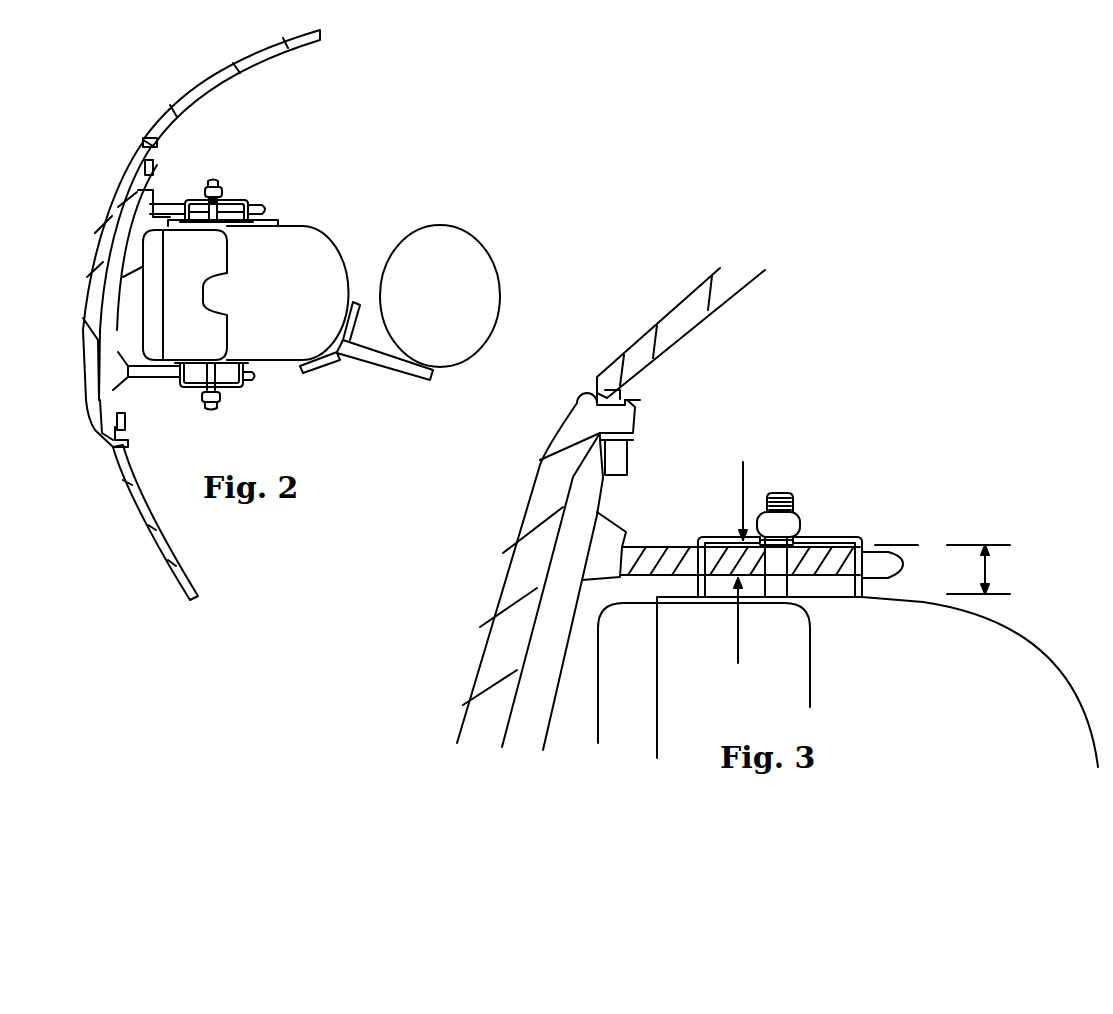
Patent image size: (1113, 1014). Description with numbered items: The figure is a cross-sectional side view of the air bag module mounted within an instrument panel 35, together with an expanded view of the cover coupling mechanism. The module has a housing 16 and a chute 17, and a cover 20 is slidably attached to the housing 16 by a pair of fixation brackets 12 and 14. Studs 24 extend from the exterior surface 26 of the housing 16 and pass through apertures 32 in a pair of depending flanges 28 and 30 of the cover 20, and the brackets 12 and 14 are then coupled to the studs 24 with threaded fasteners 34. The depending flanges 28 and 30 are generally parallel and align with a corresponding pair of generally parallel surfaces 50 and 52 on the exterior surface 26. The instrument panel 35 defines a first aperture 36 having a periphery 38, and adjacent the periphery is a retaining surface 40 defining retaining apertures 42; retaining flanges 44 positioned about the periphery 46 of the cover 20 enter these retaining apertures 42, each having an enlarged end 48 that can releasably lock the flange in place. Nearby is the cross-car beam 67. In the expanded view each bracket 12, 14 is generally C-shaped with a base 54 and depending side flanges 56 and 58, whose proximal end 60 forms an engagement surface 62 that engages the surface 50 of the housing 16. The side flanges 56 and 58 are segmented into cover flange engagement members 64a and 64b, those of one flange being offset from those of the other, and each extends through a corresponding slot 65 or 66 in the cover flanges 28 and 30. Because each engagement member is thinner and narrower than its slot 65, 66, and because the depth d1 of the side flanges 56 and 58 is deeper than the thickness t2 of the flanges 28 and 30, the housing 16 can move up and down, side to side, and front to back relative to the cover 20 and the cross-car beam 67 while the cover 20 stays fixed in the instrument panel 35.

In FIG. 2, the first fixation bracket 12 is at (188, 203).
In FIG. 3, the first fixation bracket 12 is at (858, 538).
In FIG. 2, the second fixation bracket 14 is at (180, 386).
In FIG. 2, the housing 16 is at (314, 240).
In FIG. 3, the housing 16 is at (1045, 648).
In FIG. 2, the chute 17 is at (135, 313).
In FIG. 3, the chute 17 is at (633, 687).
In FIG. 3, the cover 20 is at (568, 423).
In FIG. 2, the stud 24 is at (213, 180).
In FIG. 3, the stud 24 is at (777, 492).
In FIG. 2, the exterior surface 26 is at (343, 260).
In FIG. 2, the depending flange 28 is at (262, 208).
In FIG. 3, the depending flange 28 is at (887, 567).
In FIG. 2, the depending flange 30 is at (258, 375).
In FIG. 2, the aperture 32 is at (224, 207).
In FIG. 3, the aperture 32 is at (850, 540).
In FIG. 2, the threaded fastener 34 is at (222, 186).
In FIG. 3, the threaded fastener 34 is at (795, 512).
In FIG. 2, the instrument panel 35 is at (216, 75).
In FIG. 3, the instrument panel 35 is at (670, 307).
In FIG. 2, the first aperture 36 is at (142, 142).
In FIG. 3, the first aperture 36 is at (597, 393).
In FIG. 2, the periphery 38 is at (156, 138).
In FIG. 3, the periphery 38 is at (630, 387).
In FIG. 2, the retaining surface 40 is at (113, 412).
In FIG. 3, the retaining surface 40 is at (613, 458).
In FIG. 2, the retaining aperture 42 is at (154, 166).
In FIG. 3, the retaining aperture 42 is at (630, 434).
In FIG. 3, the retaining flange 44 is at (630, 417).
In FIG. 3, the periphery 46 is at (580, 402).
In FIG. 2, the enlarged end 48 is at (126, 444).
In FIG. 3, the enlarged end 48 is at (630, 403).
In FIG. 2, the parallel surface 50 is at (270, 224).
In FIG. 3, the parallel surface 50 is at (924, 601).
In FIG. 2, the parallel surface 52 is at (285, 368).
In FIG. 3, the base 54 is at (800, 538).
In FIG. 3, the depending side flange 56 is at (863, 592).
In FIG. 3, the depending side flange 58 is at (697, 580).
In FIG. 3, the proximal end 60 is at (708, 595).
In FIG. 3, the engagement surface 62 is at (703, 593).
In FIG. 3, the cover flange engagement member 64a is at (702, 557).
In FIG. 3, the cover flange engagement member 64b is at (852, 597).
In FIG. 3, the slot 65 is at (705, 537).
In FIG. 3, the slot 66 is at (847, 578).
In FIG. 2, the cross-car beam 67 is at (449, 350).
In FIG. 3, the thickness t2 is at (744, 552).
In FIG. 3, the depth d1 is at (947, 569).